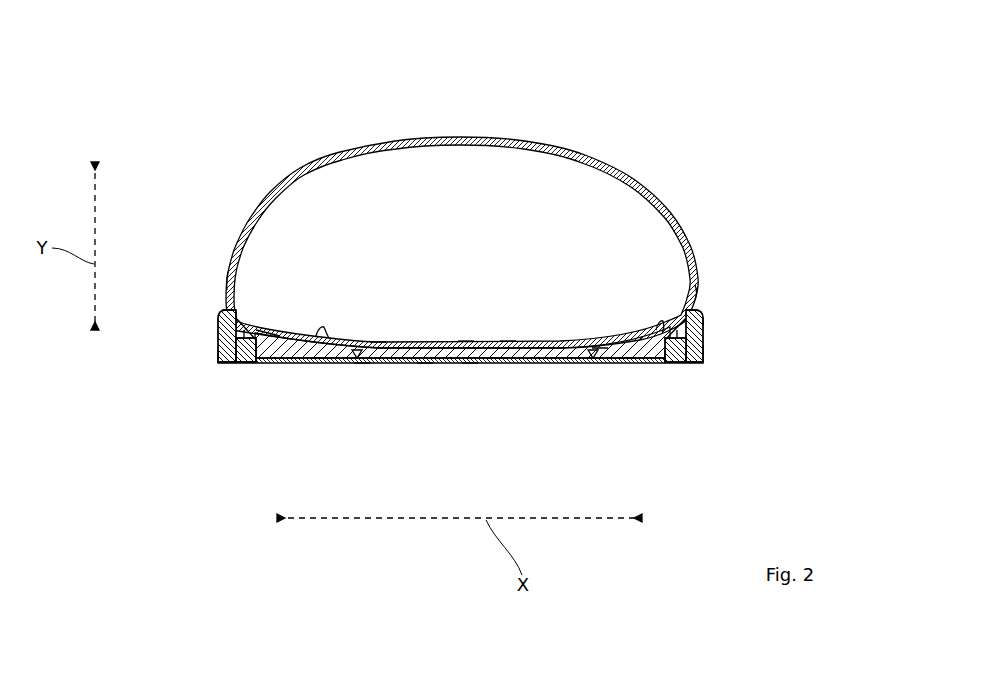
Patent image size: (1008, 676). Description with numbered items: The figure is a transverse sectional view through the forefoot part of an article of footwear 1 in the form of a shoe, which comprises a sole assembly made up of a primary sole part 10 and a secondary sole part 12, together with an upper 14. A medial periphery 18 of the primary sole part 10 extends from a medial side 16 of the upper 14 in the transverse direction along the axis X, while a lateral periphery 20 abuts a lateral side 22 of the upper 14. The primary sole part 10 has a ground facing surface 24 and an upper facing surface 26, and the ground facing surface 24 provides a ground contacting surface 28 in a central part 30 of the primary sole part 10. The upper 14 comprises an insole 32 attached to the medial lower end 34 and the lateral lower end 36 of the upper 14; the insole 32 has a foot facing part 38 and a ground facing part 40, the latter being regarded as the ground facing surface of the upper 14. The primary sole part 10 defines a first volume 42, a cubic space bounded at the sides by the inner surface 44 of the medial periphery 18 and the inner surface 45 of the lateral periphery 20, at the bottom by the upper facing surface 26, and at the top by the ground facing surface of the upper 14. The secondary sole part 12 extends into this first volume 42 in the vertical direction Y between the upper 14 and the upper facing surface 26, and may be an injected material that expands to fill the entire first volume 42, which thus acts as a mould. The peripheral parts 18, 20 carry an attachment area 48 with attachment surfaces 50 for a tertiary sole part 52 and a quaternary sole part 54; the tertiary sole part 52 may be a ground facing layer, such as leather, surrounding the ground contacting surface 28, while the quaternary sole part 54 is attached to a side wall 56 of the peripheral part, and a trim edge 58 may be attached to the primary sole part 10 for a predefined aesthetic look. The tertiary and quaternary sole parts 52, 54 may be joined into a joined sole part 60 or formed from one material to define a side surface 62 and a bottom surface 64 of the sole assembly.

The article of footwear 1 is at (643, 99).
The primary sole part 10 is at (555, 363).
The secondary sole part 12 is at (600, 340).
The upper 14 is at (253, 207).
The medial side 16 is at (228, 283).
The medial periphery 18 is at (220, 336).
The lateral periphery 20 is at (702, 335).
The lateral side 22 is at (700, 292).
The ground facing surface 24 is at (628, 365).
The upper facing surface 26 is at (362, 365).
The ground contacting surface 28 is at (425, 363).
The central part 30 is at (470, 363).
The insole 32 is at (508, 340).
The medial lower end 34 is at (226, 318).
The lateral lower end 36 is at (700, 320).
The foot facing part 38 is at (466, 340).
The ground facing part 40 is at (378, 338).
The first volume 42 is at (272, 335).
The inner surface 44 is at (270, 345).
The inner surface 45 is at (665, 362).
The attachment area 48 is at (173, 302).
The attachment surfaces 50 is at (238, 360).
The tertiary sole part 52 is at (218, 353).
The quaternary sole part 54 is at (703, 350).
The side wall 56 is at (692, 360).
The trim edge 58 is at (700, 310).
The joined sole part 60 is at (236, 358).
The side surface 62 is at (222, 355).
The bottom surface 64 is at (686, 363).